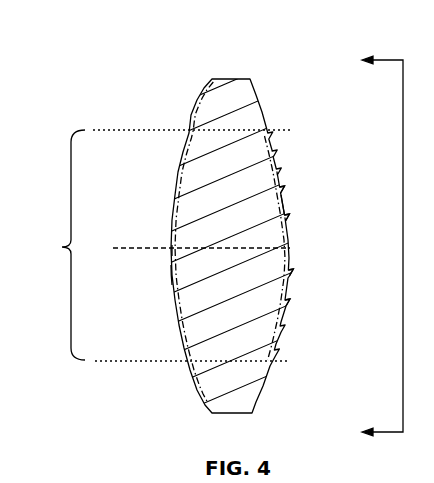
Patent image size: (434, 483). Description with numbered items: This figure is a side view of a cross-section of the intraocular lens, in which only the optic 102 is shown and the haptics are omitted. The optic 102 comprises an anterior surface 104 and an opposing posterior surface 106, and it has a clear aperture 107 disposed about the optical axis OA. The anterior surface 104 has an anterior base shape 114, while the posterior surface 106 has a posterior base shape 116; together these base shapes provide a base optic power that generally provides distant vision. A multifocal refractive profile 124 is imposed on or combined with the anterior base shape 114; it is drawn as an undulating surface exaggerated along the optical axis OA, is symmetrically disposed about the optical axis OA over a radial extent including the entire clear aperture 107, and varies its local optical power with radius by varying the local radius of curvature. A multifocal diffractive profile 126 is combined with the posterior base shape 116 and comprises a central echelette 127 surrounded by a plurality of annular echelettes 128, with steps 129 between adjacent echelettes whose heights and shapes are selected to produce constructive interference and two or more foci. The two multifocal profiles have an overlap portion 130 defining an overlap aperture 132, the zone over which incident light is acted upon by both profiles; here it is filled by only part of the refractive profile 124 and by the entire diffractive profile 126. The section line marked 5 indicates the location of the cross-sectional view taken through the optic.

The optic 102 is at (229, 58).
The anterior surface 104 is at (145, 204).
The posterior surface 106 is at (318, 141).
The clear aperture 107 is at (150, 81).
The anterior base shape 114 is at (175, 252).
The posterior base shape 116 is at (289, 268).
The multifocal refractive profile 124 is at (168, 280).
The multifocal diffractive profile 126 is at (290, 310).
The central echelette 127 is at (291, 229).
The annular echelettes 128 is at (284, 182).
The steps 129 is at (284, 196).
The overlap portion 130 is at (57, 245).
The overlap aperture 132 is at (147, 156).
The optical axis OA is at (137, 246).
The section line 5- 5 is at (382, 246).